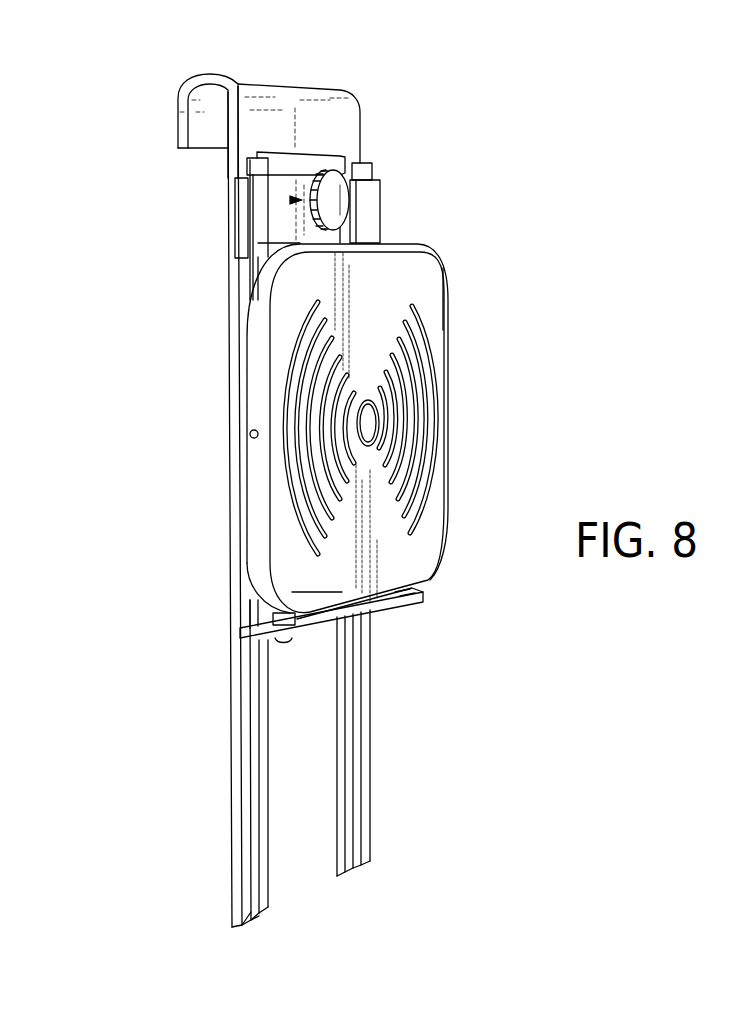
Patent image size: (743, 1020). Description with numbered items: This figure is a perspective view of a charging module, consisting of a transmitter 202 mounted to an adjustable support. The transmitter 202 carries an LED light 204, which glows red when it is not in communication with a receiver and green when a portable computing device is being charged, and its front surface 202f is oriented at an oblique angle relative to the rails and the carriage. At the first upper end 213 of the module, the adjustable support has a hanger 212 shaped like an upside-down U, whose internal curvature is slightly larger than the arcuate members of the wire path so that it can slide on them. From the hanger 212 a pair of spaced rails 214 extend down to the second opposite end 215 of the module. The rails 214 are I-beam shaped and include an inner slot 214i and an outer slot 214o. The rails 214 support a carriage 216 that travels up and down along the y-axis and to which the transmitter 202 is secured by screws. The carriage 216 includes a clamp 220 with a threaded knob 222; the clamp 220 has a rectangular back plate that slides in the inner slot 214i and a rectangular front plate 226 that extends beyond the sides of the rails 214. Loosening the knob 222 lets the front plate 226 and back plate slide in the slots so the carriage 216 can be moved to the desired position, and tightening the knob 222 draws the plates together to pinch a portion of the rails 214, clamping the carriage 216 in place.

The transmitter 202 is at (400, 428).
The front surface 202f is at (448, 342).
The LED light 204 is at (250, 433).
The hanger 212 is at (333, 107).
The first upper end 213 is at (240, 78).
The rails 214 is at (282, 524).
The outer slot 214o is at (222, 524).
The inner slot 214i is at (350, 688).
The second opposite end 215 is at (263, 917).
The carriage 216 is at (380, 218).
The clamp 220 is at (290, 200).
The threaded knob 222 is at (343, 198).
The front plate 226 is at (243, 232).